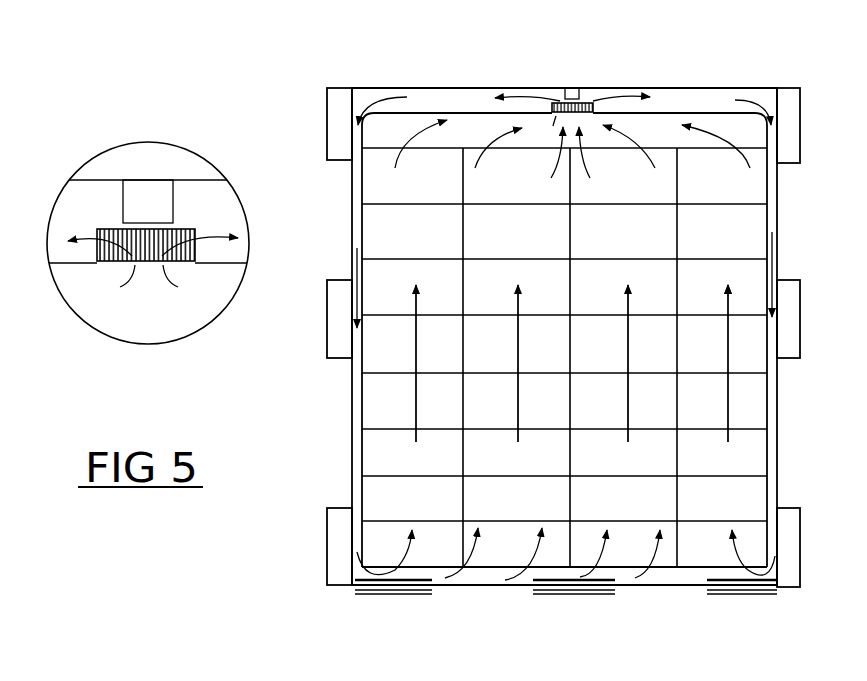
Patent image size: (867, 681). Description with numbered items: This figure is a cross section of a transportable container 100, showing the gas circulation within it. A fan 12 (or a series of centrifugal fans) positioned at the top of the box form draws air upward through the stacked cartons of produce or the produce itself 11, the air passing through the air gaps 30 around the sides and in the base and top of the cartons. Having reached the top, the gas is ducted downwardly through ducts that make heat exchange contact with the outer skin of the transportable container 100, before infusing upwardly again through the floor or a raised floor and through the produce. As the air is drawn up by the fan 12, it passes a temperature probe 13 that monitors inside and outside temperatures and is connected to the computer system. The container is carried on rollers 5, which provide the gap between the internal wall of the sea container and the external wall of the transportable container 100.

The transportable container 100 is at (679, 80).
The stacked cartons of produce 11 is at (750, 281).
The fan 12 is at (552, 103).
The temperature probe 13 is at (578, 90).
The air gaps 30 is at (352, 452).
The rollers 5 is at (698, 578).